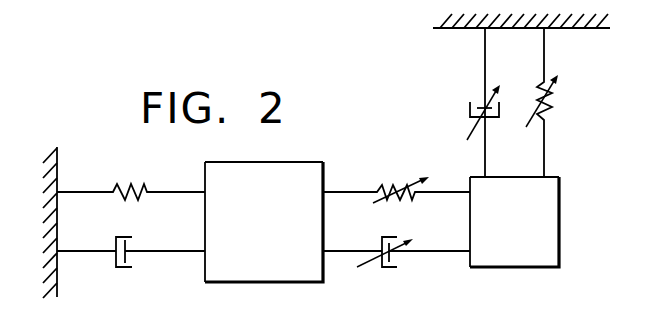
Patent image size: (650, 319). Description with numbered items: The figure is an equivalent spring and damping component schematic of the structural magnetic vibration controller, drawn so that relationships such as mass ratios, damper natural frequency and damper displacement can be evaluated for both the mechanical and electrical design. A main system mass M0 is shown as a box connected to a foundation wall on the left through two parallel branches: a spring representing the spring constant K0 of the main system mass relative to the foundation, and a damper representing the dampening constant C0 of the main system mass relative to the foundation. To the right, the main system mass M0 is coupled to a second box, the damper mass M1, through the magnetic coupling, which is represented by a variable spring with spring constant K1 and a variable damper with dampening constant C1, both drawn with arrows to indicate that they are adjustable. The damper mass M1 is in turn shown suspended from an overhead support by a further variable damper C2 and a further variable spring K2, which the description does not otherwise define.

The spring constant of main system mass relative to foundation K0 is at (131, 171).
The dampening constant of main system mass relative to foundation C0 is at (131, 239).
The main system mass M0 is at (264, 222).
The variable spring constant of magnetic coupling K1 is at (396, 173).
The variable dampening constant of magnetic coupling C1 is at (396, 239).
The damper mass M1 is at (514, 222).
The variable damper C2 between M1 and ceiling C2 is at (471, 102).
The variable spring K2 between M1 and ceiling K2 is at (558, 102).